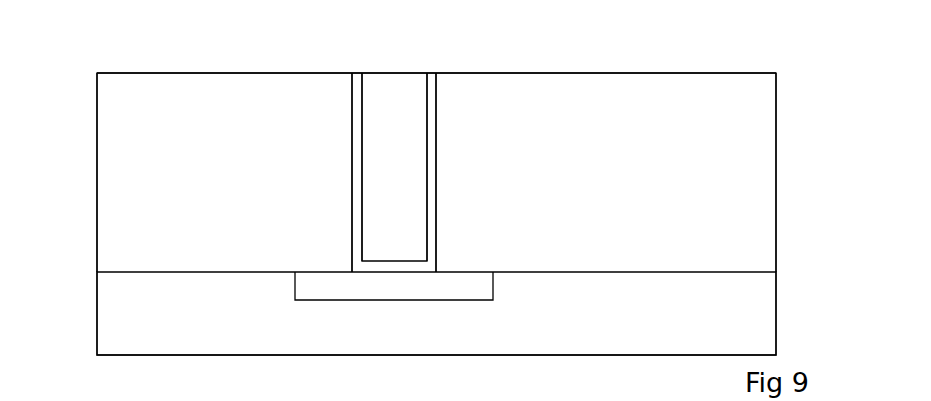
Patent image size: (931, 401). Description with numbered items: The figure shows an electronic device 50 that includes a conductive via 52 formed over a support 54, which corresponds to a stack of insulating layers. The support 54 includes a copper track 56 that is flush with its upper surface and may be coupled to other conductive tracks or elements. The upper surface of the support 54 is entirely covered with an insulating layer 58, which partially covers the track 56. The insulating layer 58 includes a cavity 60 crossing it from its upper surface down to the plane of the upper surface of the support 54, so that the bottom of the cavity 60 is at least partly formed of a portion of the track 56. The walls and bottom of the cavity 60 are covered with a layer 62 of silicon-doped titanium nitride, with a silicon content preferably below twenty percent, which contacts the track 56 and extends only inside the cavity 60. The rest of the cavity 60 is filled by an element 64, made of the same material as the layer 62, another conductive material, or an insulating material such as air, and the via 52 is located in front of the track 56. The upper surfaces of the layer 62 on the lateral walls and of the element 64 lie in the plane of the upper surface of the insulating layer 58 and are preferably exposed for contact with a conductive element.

The electronic device 50 is at (690, 43).
The conductive via 52 is at (437, 61).
The support 54 is at (123, 313).
The copper track 56 is at (335, 292).
The insulating layer 58 is at (123, 198).
The cavity 60 is at (345, 147).
The layer 62 is at (357, 87).
The element 64 is at (395, 88).